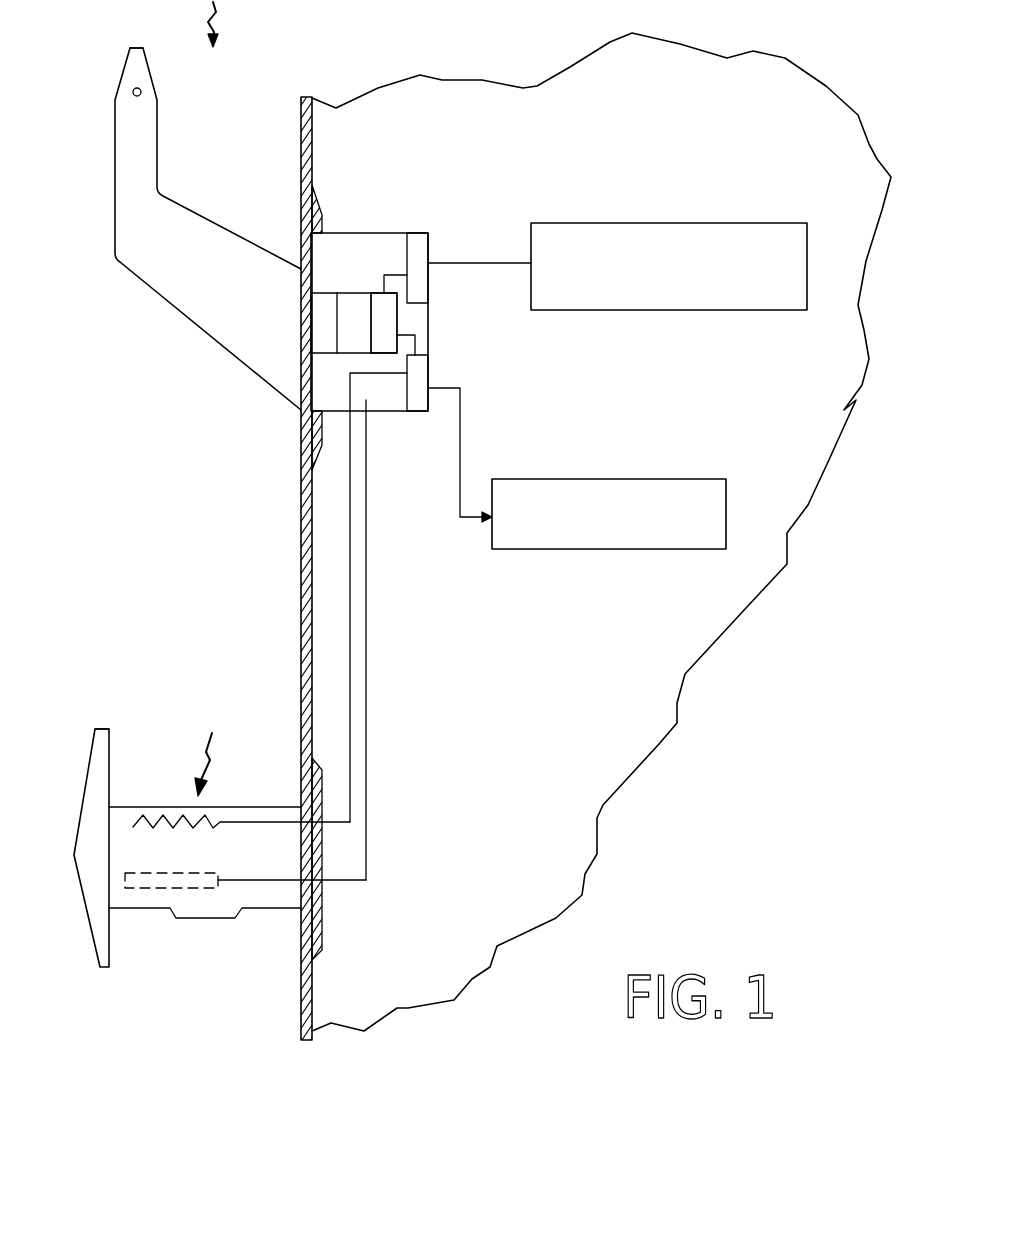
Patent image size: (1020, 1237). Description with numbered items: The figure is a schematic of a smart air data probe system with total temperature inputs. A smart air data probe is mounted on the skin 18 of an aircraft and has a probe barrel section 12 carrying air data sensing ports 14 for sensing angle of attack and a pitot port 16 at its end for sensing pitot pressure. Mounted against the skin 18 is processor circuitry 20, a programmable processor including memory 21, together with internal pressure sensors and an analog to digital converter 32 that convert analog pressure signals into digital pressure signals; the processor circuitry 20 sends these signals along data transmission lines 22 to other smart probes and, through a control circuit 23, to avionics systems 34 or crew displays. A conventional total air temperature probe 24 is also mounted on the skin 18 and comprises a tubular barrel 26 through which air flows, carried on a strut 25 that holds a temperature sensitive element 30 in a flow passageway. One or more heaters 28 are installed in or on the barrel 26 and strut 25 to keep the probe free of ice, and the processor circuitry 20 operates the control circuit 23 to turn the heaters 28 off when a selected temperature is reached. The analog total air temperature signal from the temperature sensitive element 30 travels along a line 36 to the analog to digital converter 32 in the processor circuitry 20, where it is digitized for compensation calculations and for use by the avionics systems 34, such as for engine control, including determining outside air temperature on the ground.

The probe barrel section 12 is at (122, 130).
The air data sensing ports 14 is at (133, 90).
The pitot port 16 is at (130, 48).
The skin 18 is at (301, 130).
The processor circuitry 20 is at (388, 246).
The memory 21 is at (387, 313).
The data transmission lines 22 is at (470, 262).
The control circuit 23 is at (418, 364).
The total air temperature probe 24 is at (211, 748).
The strut 25 is at (263, 833).
The tubular barrel 26 is at (85, 775).
The heaters 28 is at (95, 729).
The temperature sensitive element 30 is at (150, 888).
The analog to digital converter 32 is at (351, 293).
The avionics systems 34 is at (567, 479).
The line 36 is at (366, 633).